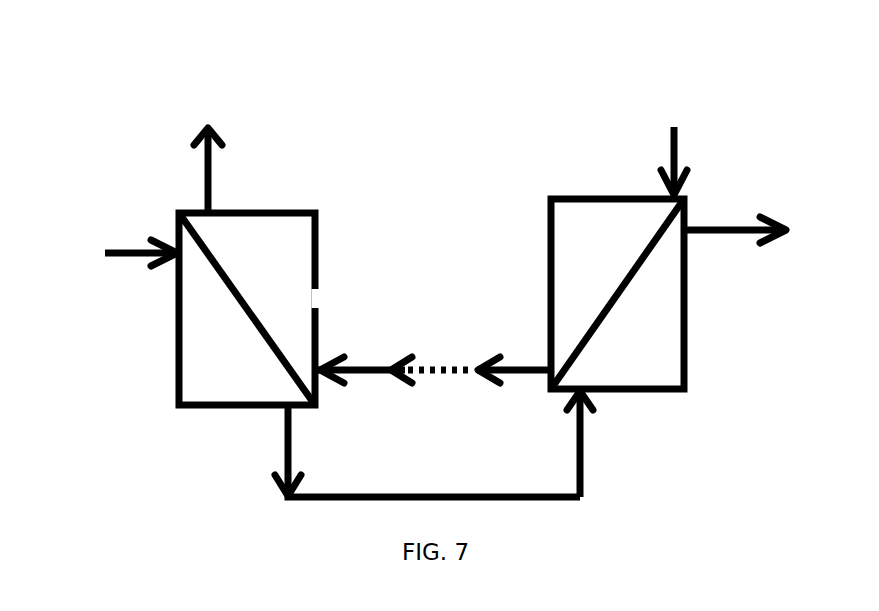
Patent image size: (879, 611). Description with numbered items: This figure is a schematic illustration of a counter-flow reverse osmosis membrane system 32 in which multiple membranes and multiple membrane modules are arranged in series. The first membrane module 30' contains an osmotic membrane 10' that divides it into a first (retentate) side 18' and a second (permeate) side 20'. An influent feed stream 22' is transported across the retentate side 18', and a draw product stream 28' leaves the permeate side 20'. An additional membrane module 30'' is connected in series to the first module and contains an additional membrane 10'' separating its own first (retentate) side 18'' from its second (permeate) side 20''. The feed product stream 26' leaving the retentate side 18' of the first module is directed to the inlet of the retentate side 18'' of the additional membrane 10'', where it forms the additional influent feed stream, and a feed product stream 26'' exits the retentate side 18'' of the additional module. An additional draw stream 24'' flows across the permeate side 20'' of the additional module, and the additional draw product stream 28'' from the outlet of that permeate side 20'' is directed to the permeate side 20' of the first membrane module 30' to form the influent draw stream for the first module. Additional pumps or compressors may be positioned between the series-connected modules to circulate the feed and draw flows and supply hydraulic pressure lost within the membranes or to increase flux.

The membrane system 32 is at (96, 118).
The first membrane module 30' is at (191, 309).
The additional membrane module 30'' is at (577, 290).
The osmotic membrane 10' is at (287, 306).
The additional membrane 10'' is at (668, 294).
The second (permeate) side 20' is at (271, 243).
The second (permeate) side 20'' is at (589, 232).
The first (retentate) side 18' is at (214, 373).
The first (retentate) side 18'' is at (647, 357).
The influent feed stream 22' is at (136, 225).
The draw product stream 28' is at (233, 170).
The feed product stream 26' is at (391, 451).
The additional draw stream 24'' is at (705, 160).
The feed product stream 26'' is at (735, 216).
The additional draw product stream 28'' is at (512, 387).